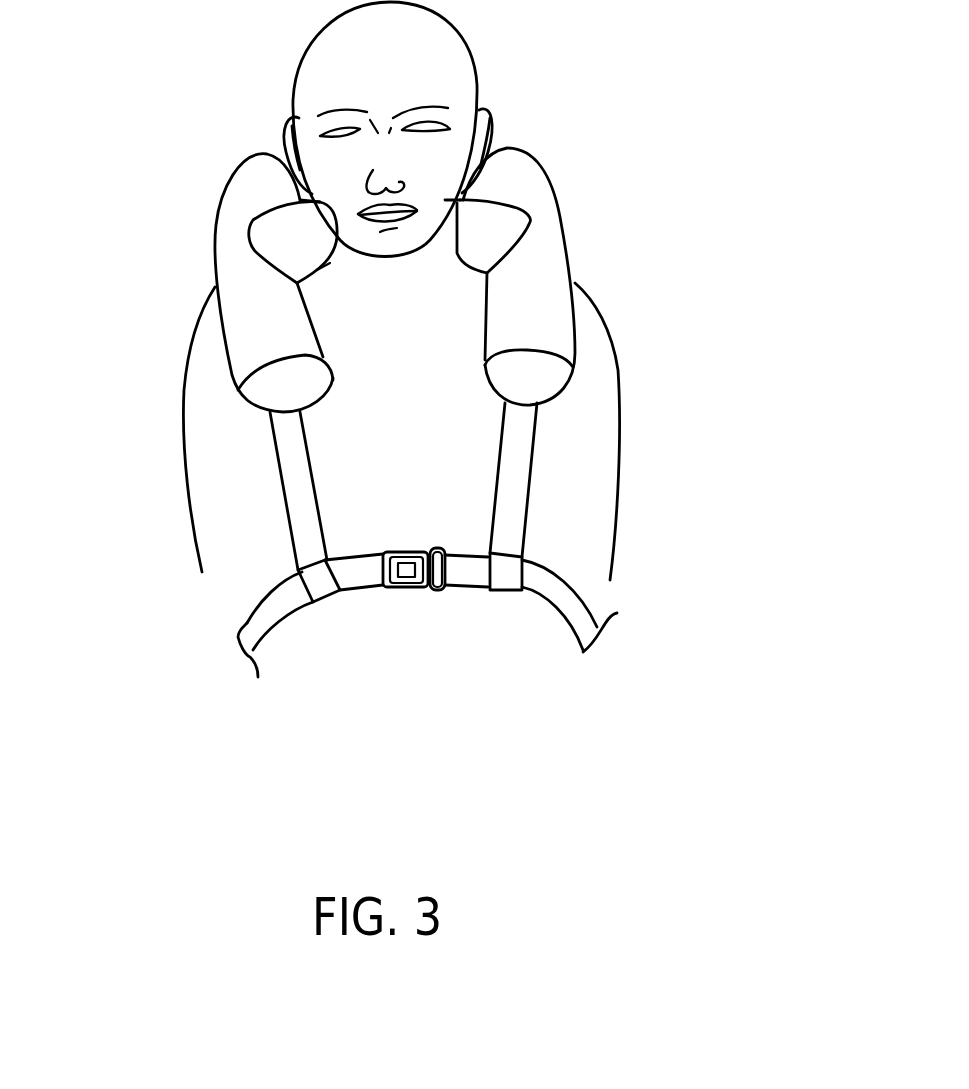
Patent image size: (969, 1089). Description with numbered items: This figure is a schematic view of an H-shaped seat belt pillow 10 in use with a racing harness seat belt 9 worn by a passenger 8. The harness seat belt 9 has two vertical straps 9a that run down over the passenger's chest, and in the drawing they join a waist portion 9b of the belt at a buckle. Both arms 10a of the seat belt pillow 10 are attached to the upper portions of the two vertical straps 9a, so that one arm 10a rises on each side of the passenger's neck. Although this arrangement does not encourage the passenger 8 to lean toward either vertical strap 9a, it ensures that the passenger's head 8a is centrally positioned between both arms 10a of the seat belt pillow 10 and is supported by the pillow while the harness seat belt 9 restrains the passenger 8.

The passenger 8 is at (423, 471).
The passenger's head 8a is at (477, 62).
The harness seat belt 9 is at (427, 619).
The vertical straps 9a is at (285, 437).
The waist belt 9b is at (567, 597).
The H-shaped seat belt pillow 10 is at (396, 262).
The arms 10a is at (240, 272).